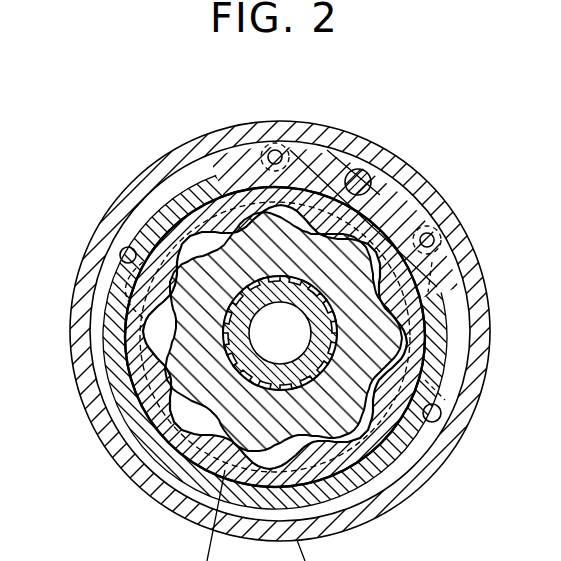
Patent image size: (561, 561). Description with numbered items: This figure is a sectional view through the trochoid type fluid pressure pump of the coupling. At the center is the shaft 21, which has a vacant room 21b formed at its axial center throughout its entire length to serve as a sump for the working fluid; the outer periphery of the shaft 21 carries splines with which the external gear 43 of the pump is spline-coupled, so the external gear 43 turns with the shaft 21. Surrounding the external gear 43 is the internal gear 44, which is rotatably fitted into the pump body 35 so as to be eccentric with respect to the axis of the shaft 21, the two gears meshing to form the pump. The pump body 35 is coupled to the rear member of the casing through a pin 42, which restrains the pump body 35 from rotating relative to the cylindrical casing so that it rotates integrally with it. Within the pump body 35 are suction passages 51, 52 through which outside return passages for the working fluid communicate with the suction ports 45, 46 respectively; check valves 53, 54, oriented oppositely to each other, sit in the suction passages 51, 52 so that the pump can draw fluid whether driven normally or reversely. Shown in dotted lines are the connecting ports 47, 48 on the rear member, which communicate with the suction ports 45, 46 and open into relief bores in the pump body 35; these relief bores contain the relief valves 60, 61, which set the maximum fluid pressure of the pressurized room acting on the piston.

The shaft 21 is at (175, 492).
The vacant room 21b is at (165, 425).
The pump body 35 is at (455, 318).
The pin 42 is at (370, 160).
The external gear 43 is at (397, 355).
The internal gear 44 is at (417, 300).
The suction port 45 is at (200, 187).
The suction port 46 is at (433, 268).
The connecting port 47 is at (112, 293).
The connecting port 48 is at (430, 387).
The suction passage 51 is at (262, 148).
The suction passage 52 is at (442, 248).
The check valve 53 is at (280, 150).
The check valve 54 is at (430, 235).
The relief valve 60 is at (122, 250).
The relief valve 61 is at (450, 415).